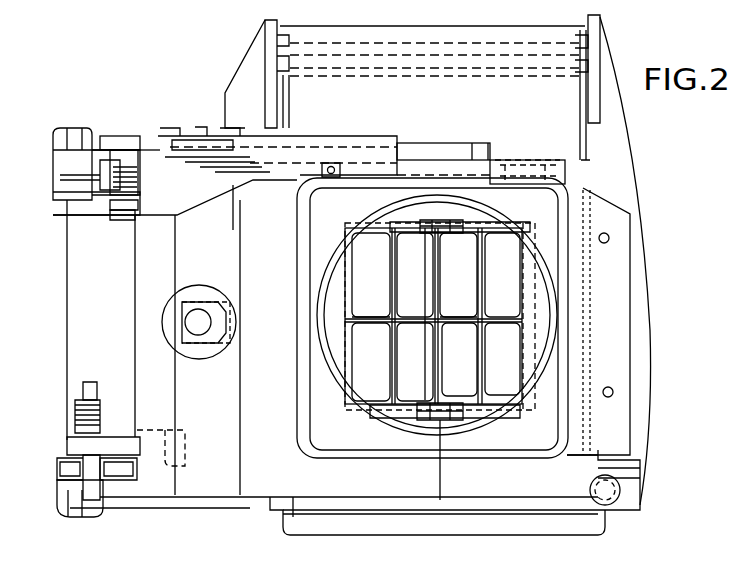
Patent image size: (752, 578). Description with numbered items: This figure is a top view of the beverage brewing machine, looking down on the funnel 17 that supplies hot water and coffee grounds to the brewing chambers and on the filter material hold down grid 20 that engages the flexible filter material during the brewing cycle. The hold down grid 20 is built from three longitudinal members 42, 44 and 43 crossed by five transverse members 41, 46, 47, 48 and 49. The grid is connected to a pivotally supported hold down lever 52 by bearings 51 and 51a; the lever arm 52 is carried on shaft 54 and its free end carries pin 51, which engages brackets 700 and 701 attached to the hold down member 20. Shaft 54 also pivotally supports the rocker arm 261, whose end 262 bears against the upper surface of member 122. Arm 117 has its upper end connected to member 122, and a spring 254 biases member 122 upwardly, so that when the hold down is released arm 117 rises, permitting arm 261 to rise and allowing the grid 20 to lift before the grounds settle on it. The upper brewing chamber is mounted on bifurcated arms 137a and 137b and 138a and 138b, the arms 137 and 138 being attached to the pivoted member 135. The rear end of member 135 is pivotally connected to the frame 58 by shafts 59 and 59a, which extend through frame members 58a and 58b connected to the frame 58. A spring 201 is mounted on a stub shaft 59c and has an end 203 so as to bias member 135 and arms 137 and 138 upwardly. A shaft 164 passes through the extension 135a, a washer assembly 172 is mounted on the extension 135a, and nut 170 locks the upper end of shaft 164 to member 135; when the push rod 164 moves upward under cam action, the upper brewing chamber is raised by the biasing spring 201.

The funnel 17 is at (552, 298).
The filter material hold down grid 20 is at (412, 311).
The transverse member 41 is at (350, 294).
The longitudinal member 42 is at (372, 240).
The longitudinal member 43 is at (366, 320).
The longitudinal member 44 is at (368, 410).
The transverse member 46 is at (392, 274).
The transverse member 47 is at (437, 264).
The transverse member 48 is at (480, 269).
The transverse member 49 is at (518, 350).
The bearing 51 is at (435, 225).
The bearing 51a is at (440, 500).
The hold down lever 52 is at (472, 243).
The shaft 54 is at (532, 164).
The frame 58 is at (80, 333).
The frame member 58a is at (65, 185).
The frame member 58b is at (120, 470).
The shaft 59 is at (83, 165).
The shaft 59a is at (95, 478).
The stub shaft 59c is at (85, 383).
The arm 117 is at (200, 128).
The member 122 is at (304, 145).
The pivoted member 135 is at (275, 440).
The extension 135a is at (240, 258).
The arm 137 is at (440, 143).
The bifurcated arm 137a is at (105, 152).
The bifurcated arm 137b is at (77, 202).
The arm 138 is at (378, 480).
The bifurcated arm 138a is at (67, 452).
The bifurcated arm 138b is at (78, 488).
The shaft 164 is at (195, 322).
The nut 170 is at (182, 335).
The washer assembly 172 is at (203, 358).
The spring 201 is at (75, 402).
The spring end 203 is at (185, 462).
The spring 254 is at (135, 150).
The rocker arm 261 is at (503, 162).
The rocker arm end 262 is at (292, 181).
The bracket 700 is at (415, 225).
The bracket 701 is at (415, 415).